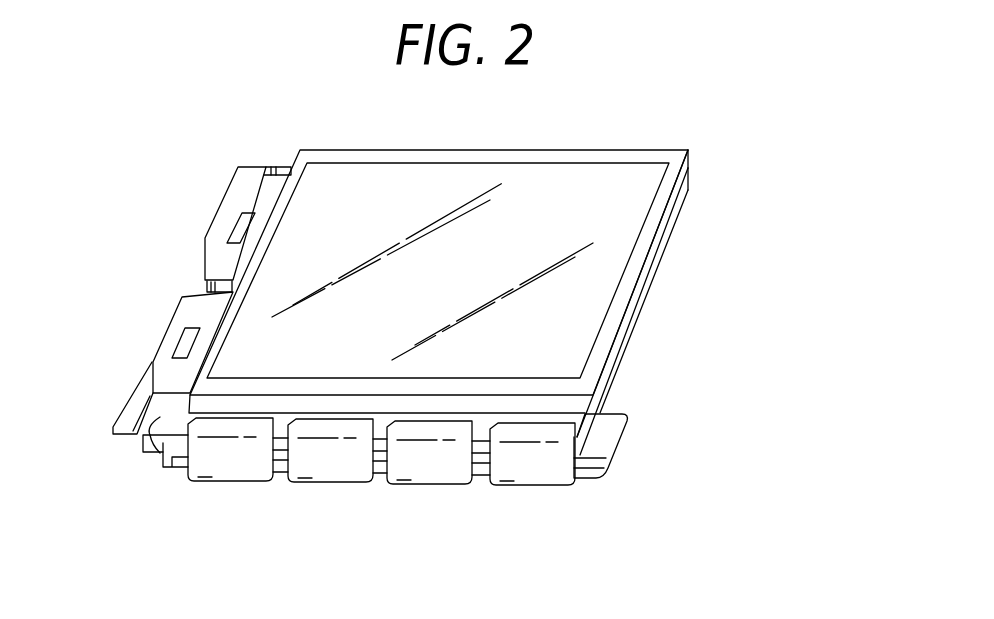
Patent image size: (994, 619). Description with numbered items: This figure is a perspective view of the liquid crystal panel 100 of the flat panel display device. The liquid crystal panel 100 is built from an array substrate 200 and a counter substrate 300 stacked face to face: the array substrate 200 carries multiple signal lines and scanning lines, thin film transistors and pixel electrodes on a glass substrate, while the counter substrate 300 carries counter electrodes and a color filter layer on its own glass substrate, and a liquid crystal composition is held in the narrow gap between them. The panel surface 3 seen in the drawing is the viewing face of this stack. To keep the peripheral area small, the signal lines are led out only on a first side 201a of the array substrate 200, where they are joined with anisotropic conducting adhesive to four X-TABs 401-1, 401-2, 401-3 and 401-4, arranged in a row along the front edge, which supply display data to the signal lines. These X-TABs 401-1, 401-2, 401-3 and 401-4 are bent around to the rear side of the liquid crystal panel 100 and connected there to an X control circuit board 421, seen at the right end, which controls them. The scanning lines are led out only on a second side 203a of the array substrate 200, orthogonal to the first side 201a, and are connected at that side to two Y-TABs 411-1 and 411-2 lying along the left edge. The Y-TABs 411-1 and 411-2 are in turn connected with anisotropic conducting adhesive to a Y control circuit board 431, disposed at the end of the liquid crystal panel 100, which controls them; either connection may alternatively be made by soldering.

The display panel / glass 3 is at (567, 185).
The liquid crystal panel 100 is at (512, 297).
The counter substrate 300 is at (690, 165).
The array substrate 200 is at (690, 190).
The Y-TAB 411-1 is at (192, 312).
The Y-TAB 411-2 is at (237, 210).
The Y control circuit board 431 is at (122, 440).
The second side 203a is at (158, 457).
The first side 201a is at (163, 453).
The X-TAB 401-1 is at (550, 473).
The X-TAB 401-2 is at (450, 472).
The X-TAB 401-3 is at (345, 475).
The X-TAB 401-4 is at (252, 473).
The X control circuit board 421 is at (608, 438).